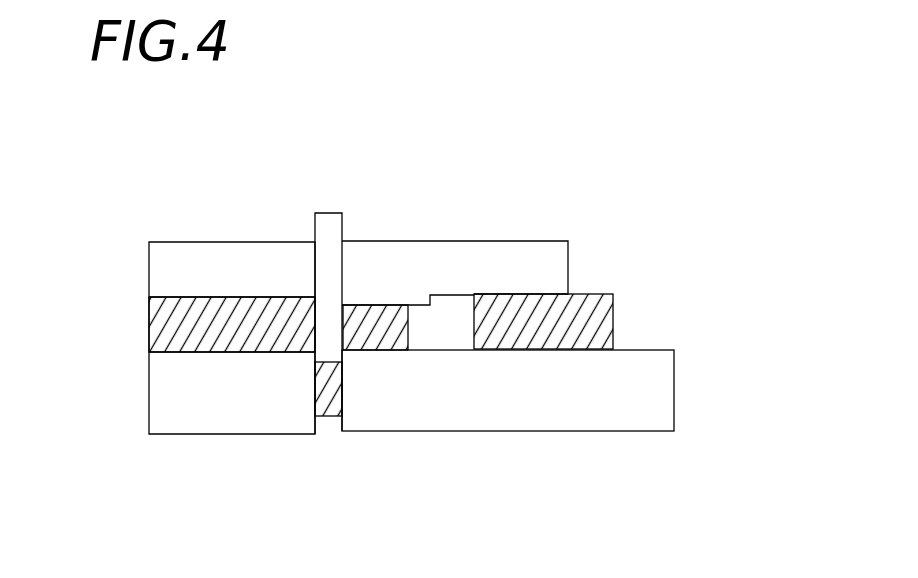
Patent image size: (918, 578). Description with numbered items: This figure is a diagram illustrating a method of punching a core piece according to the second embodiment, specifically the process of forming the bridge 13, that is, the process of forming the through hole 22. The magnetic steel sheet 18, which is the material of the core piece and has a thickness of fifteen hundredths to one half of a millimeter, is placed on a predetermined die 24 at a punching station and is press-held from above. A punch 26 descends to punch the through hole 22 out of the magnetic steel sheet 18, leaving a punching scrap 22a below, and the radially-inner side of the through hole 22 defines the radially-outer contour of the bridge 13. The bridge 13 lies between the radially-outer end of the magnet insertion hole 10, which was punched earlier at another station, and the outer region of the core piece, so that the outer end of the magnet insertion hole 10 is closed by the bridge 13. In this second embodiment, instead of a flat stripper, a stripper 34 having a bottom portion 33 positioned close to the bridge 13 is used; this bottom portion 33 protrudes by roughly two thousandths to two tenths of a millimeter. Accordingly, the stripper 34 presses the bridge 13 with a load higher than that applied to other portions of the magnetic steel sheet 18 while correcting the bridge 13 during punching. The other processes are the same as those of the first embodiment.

The magnet insertion hole 10 is at (452, 333).
The bridge 13 is at (376, 340).
The magnetic steel sheet 18 is at (140, 333).
The through hole 22 is at (330, 335).
The punching scrap 22a is at (330, 368).
The die 24 is at (217, 422).
The punch 26 is at (330, 222).
The bottom portion 33 is at (373, 298).
The stripper 34 is at (488, 228).